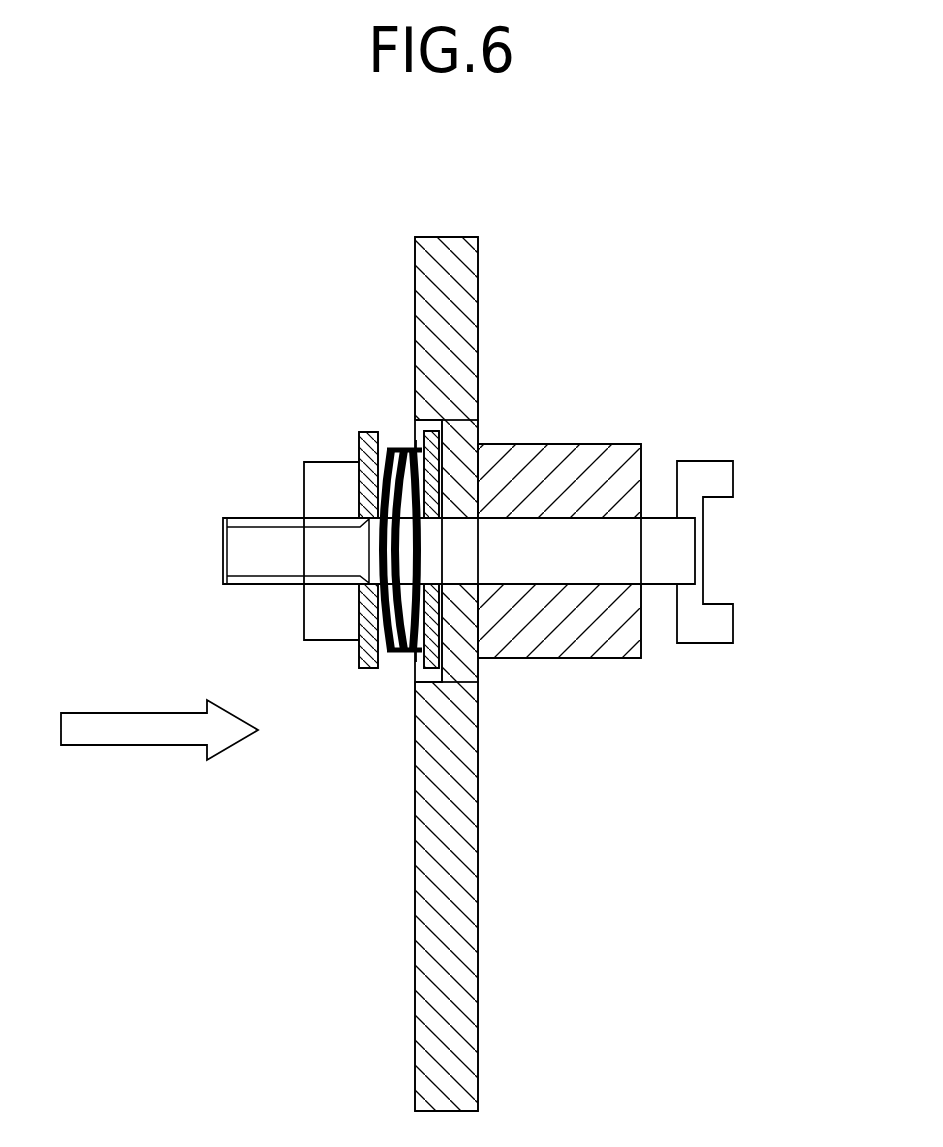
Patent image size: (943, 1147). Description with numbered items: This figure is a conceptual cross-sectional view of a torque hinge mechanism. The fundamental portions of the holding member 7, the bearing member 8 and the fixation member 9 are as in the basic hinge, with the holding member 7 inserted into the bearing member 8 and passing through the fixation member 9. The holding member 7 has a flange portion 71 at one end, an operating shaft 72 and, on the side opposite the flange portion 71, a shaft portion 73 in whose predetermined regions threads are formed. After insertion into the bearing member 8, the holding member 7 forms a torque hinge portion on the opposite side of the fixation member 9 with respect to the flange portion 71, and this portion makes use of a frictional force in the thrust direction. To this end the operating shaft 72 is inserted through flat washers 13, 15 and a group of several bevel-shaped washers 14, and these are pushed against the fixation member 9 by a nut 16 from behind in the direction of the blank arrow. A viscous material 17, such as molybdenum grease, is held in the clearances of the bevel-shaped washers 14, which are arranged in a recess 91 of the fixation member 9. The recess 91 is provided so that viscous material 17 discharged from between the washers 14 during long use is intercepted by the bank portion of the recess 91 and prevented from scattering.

The holding member 7 is at (736, 259).
The bearing member 8 is at (562, 450).
The fixation member 9 is at (448, 245).
The recess 91 is at (432, 428).
The flat washer 13 is at (432, 662).
The bevel-shaped washers 14 is at (403, 650).
The flat washer 15 is at (360, 658).
The nut 16 is at (323, 477).
The viscous material 17 is at (416, 450).
The flange portion 71 is at (717, 624).
The operating shaft 72 is at (655, 515).
The shaft portion 73 is at (241, 535).